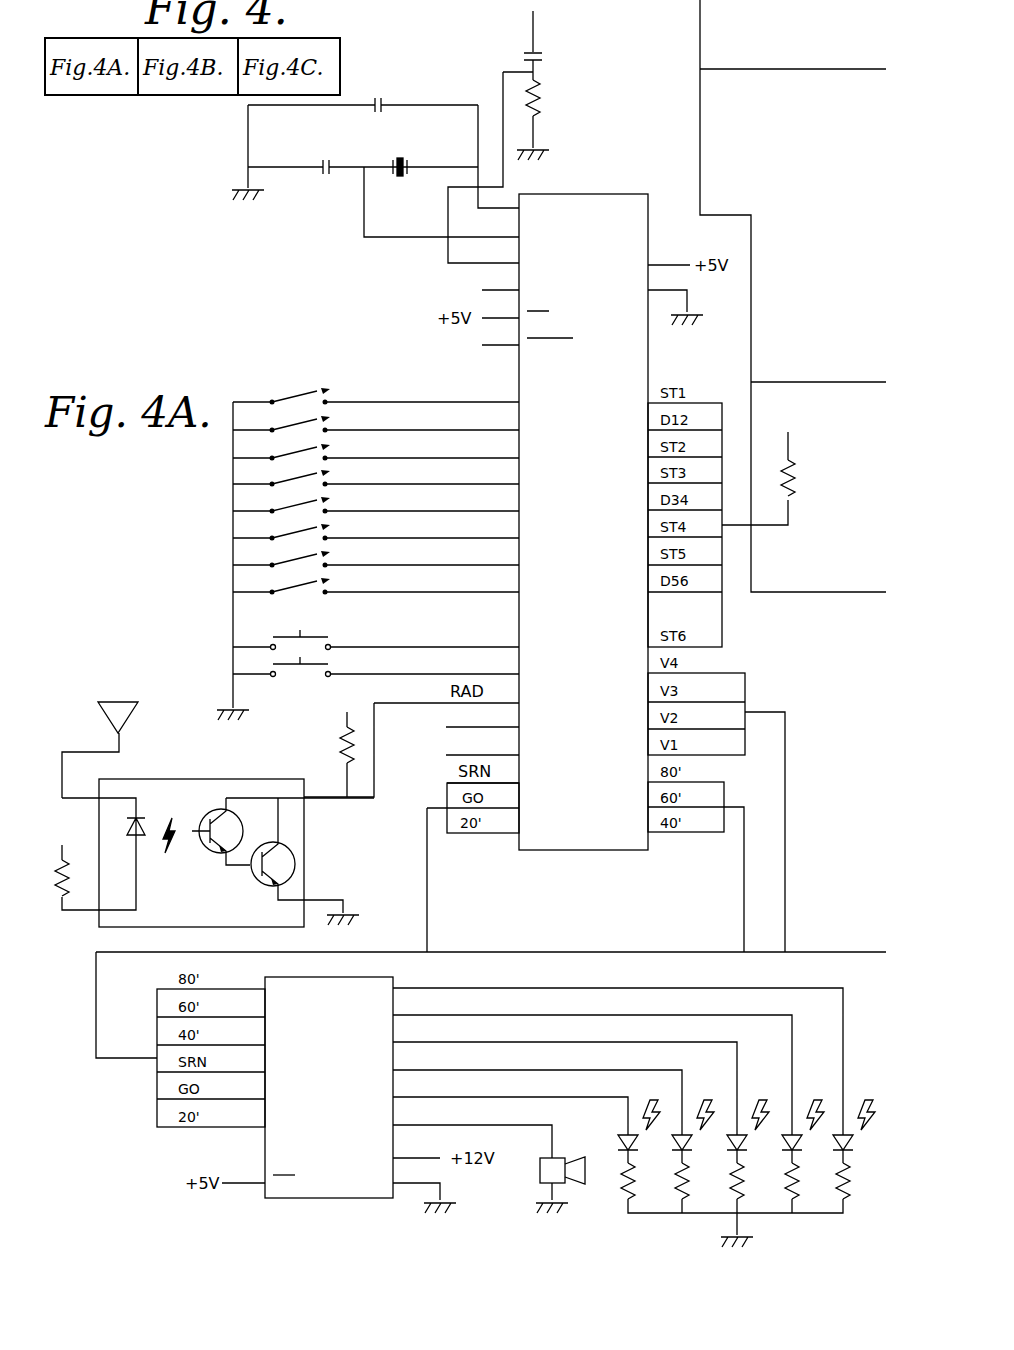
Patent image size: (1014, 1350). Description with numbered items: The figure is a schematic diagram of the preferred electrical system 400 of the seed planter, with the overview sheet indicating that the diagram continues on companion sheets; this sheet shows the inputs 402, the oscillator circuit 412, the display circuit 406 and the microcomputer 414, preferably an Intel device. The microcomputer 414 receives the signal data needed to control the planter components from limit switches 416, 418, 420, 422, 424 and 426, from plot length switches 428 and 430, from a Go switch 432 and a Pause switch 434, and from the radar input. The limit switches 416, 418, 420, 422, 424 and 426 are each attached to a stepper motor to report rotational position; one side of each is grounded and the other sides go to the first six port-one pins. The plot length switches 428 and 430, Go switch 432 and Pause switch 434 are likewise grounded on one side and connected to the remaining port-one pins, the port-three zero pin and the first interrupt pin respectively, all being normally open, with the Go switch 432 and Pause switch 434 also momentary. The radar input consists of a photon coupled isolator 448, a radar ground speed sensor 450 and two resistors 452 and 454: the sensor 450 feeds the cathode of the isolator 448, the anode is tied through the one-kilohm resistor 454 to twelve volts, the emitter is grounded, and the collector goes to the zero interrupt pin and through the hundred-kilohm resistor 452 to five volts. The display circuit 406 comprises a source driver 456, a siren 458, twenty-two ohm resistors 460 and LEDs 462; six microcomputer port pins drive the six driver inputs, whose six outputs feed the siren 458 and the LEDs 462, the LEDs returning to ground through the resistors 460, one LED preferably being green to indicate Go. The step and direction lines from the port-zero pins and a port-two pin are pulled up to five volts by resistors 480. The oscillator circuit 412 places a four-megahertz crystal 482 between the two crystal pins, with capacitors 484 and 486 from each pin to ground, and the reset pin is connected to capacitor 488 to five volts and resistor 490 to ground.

The electrical system 400 is at (213, 149).
The inputs 402 is at (172, 701).
The display circuit 406 is at (140, 1168).
The oscillator circuit 412 is at (222, 252).
The microcomputer 414 is at (575, 850).
The limit switch 416 is at (376, 392).
The limit switch 418 is at (376, 420).
The limit switch 420 is at (376, 448).
The limit switch 422 is at (376, 474).
The limit switch 424 is at (376, 501).
The limit switch 426 is at (376, 528).
The plot length switch 428 is at (376, 555).
The plot length switch 430 is at (376, 582).
The Go switch 432 is at (376, 637).
The Pause switch 434 is at (376, 664).
The photon coupled isolator 448 is at (244, 927).
The radar ground speed sensor 450 is at (109, 722).
The resistor 452 is at (338, 754).
The resistor 454 is at (62, 898).
The source driver 456 is at (320, 1198).
The siren 458 is at (538, 1175).
The resistors 460 is at (742, 1190).
The LEDs 462 is at (843, 1140).
The resistors 480 is at (795, 490).
The crystal 482 is at (394, 160).
The capacitor 484 is at (383, 103).
The capacitor 486 is at (320, 175).
The capacitor 488 is at (542, 60).
The resistor 490 is at (545, 116).